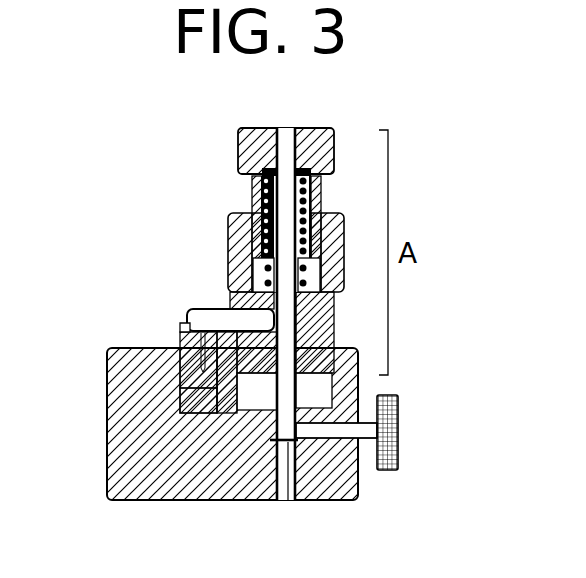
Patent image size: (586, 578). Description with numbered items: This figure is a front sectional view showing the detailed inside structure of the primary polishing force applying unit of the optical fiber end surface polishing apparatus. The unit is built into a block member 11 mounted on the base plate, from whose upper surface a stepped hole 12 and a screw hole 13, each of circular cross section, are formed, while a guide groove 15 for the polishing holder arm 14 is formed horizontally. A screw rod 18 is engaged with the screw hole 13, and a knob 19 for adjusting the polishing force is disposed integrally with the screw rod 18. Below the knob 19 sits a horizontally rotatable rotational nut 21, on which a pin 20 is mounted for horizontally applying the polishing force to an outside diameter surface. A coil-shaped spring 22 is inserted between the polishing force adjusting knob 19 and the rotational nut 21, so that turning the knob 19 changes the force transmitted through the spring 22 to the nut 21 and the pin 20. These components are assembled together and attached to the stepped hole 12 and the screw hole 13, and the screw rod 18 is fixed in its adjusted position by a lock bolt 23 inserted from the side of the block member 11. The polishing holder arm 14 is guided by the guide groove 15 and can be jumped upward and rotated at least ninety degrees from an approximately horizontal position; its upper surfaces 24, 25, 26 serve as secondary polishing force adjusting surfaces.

The block member 11 is at (143, 490).
The stepped hole 12 is at (243, 400).
The screw hole 13 is at (282, 490).
The polishing holder arm 14 is at (180, 403).
The guide groove 15 is at (180, 383).
The screw rod 18 is at (298, 463).
The knob 19 is at (323, 103).
The pin 20 is at (222, 307).
The rotational nut 21 is at (227, 225).
The coil-shaped spring 22 is at (318, 197).
The lock bolt 23 is at (395, 435).
The upper surface of polishing holder arm 24 is at (180, 337).
The upper surface of polishing holder arm 25 is at (180, 327).
The upper surface of polishing holder arm 26 is at (183, 325).